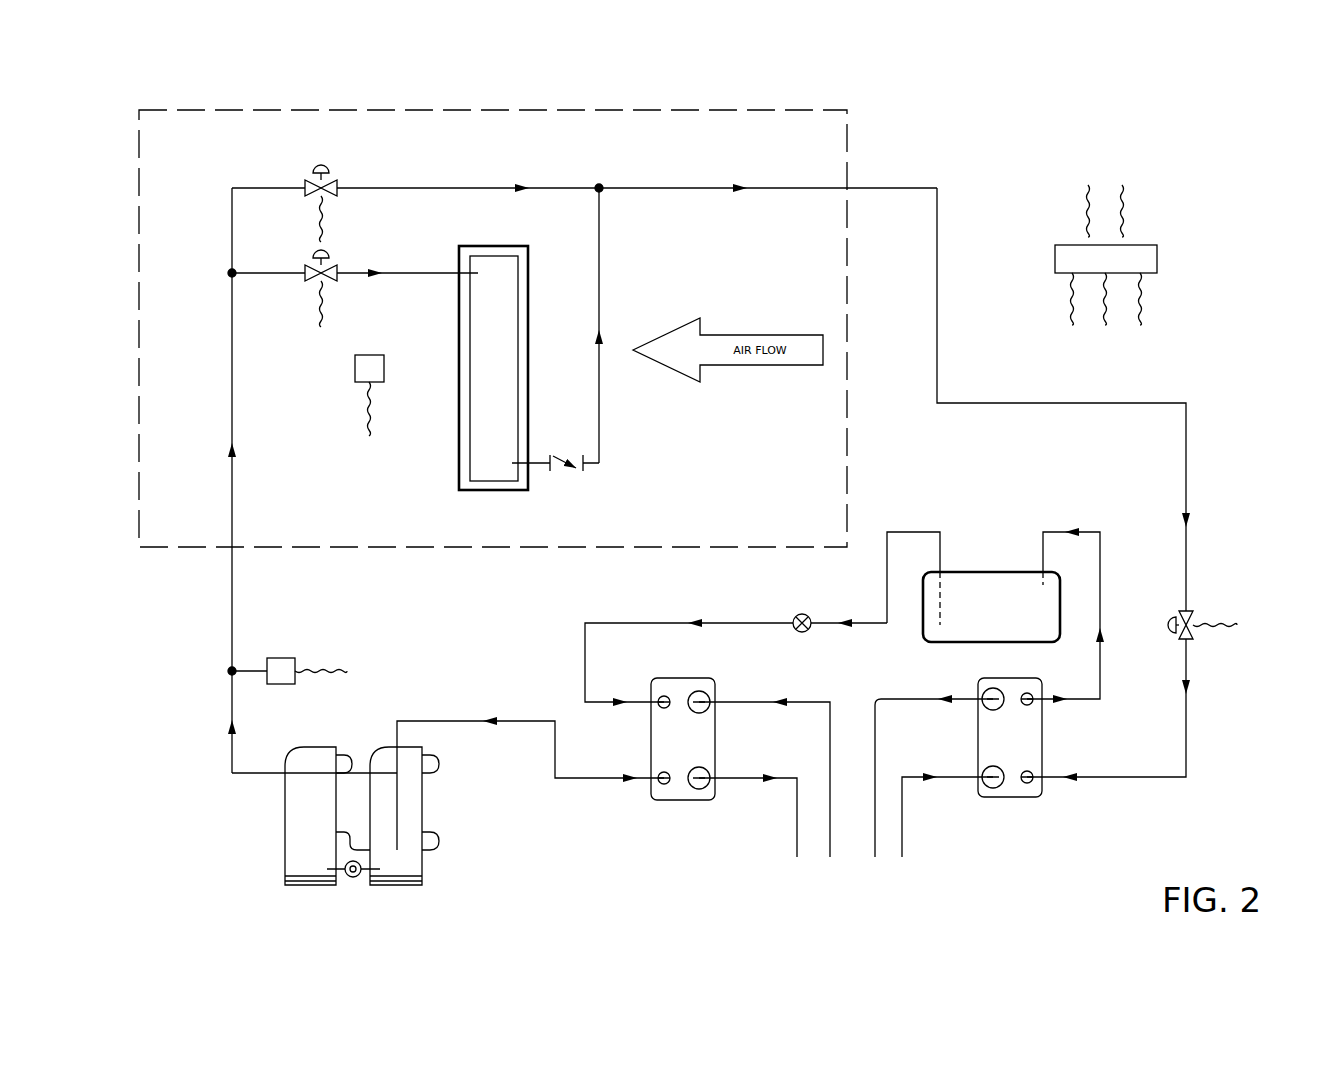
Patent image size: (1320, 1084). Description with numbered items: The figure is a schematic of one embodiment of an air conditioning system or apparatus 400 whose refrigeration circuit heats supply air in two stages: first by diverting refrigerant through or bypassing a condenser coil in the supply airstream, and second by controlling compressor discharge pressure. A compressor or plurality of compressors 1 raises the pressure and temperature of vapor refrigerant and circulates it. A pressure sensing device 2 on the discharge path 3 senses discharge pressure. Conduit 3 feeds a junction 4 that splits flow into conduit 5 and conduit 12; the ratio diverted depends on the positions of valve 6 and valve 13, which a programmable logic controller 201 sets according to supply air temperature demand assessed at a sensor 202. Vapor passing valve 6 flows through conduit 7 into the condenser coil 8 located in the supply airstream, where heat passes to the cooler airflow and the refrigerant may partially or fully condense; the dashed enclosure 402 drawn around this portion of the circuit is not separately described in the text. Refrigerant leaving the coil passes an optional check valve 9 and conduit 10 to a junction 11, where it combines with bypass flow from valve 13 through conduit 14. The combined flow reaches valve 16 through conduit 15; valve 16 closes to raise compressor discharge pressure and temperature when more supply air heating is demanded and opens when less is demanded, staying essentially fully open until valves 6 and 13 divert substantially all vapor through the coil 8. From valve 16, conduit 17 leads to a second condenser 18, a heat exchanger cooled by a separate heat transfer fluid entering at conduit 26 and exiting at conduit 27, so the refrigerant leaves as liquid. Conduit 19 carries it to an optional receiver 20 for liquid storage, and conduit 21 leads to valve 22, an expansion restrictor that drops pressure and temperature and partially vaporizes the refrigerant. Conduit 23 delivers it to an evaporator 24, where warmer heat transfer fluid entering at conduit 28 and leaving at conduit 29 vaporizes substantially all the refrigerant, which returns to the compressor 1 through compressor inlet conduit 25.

The compressor 1 is at (306, 745).
The pressure sensing device 2 is at (284, 656).
The discharge path 3 is at (238, 415).
The junction 4 is at (226, 268).
The conduit 5 is at (244, 268).
The valve 6 is at (344, 283).
The conduit 7 is at (432, 268).
The condenser coil 8 is at (500, 245).
The check valve 9 is at (564, 483).
The conduit 10 is at (605, 282).
The junction 11 is at (606, 184).
The conduit 12 is at (273, 186).
The valve 13 is at (339, 172).
The conduit 14 is at (490, 185).
The conduit 15 is at (940, 292).
The valve 16 is at (1196, 609).
The conduit 17 is at (1191, 760).
The second condenser 18 is at (1046, 760).
The conduit 19 is at (1099, 528).
The receiver 20 is at (986, 570).
The conduit 21 is at (921, 528).
The valve 22 is at (813, 612).
The conduit 23 is at (625, 620).
The evaporator 24 is at (718, 762).
The compressor inlet conduit 25 is at (454, 728).
The conduit 26 is at (906, 825).
The conduit 27 is at (915, 697).
The conduit 28 is at (729, 697).
The conduit 29 is at (794, 828).
The programmable logic controller 201 is at (1160, 252).
The sensor 202 is at (388, 375).
The air conditioning system 400 is at (1192, 162).
The outdoor unit enclosure 402 is at (850, 160).